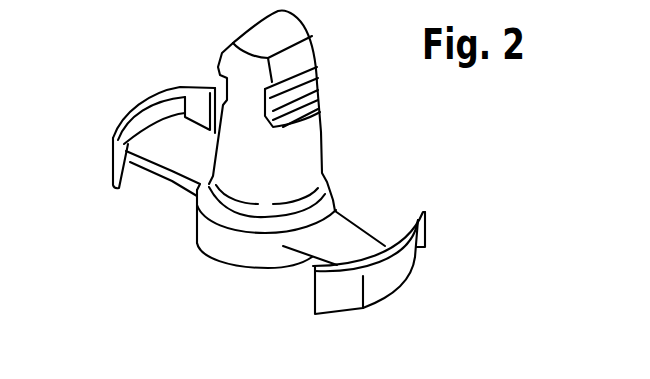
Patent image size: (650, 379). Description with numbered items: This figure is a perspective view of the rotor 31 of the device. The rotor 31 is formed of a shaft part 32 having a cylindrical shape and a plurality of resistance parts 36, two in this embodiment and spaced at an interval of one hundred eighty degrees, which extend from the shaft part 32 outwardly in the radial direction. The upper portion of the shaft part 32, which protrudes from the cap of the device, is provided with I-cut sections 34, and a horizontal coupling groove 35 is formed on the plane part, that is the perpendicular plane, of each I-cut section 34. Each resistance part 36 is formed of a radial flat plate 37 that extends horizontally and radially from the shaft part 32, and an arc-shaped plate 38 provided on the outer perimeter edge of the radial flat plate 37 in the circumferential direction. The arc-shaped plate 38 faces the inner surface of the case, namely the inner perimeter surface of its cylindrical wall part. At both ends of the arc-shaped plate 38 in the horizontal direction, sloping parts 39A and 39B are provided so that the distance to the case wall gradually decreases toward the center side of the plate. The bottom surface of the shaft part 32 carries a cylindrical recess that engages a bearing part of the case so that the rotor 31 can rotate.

The rotor 31 is at (184, 270).
The shaft part 32 is at (292, 25).
The I-cut section 34 is at (310, 108).
The horizontal coupling groove 35 is at (310, 79).
The resistance part 36 is at (294, 283).
The radial flat plate 37 is at (175, 162).
The arc-shaped plate 38 is at (144, 102).
The sloping part 39A is at (199, 80).
The sloping part 39B is at (113, 135).